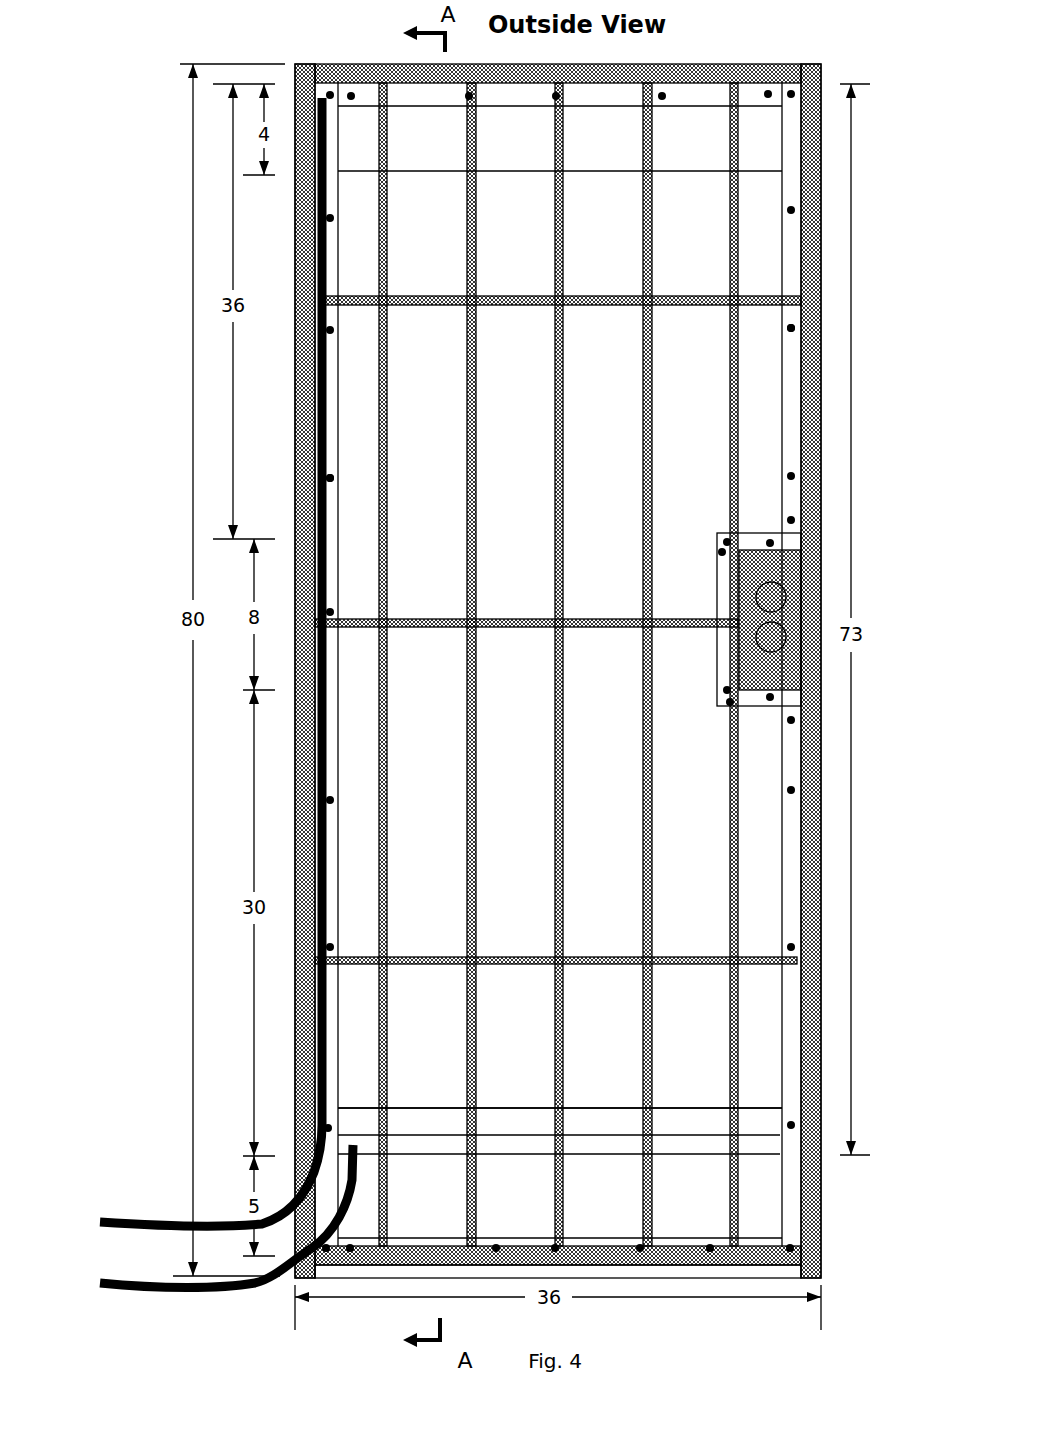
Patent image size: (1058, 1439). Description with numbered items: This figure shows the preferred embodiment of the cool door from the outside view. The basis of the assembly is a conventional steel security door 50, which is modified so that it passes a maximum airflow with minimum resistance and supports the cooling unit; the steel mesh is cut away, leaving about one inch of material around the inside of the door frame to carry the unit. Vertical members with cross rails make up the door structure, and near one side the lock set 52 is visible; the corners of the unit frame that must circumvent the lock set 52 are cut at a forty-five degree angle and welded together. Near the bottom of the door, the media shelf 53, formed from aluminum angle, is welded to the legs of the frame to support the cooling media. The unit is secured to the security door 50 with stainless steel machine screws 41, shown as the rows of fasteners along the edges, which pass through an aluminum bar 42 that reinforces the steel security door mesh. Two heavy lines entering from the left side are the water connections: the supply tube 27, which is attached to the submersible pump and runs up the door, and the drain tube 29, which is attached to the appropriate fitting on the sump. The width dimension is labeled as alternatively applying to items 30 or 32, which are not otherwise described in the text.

The supply tube 27 is at (178, 1222).
The drain tube 29 is at (134, 1282).
The wall panel 30 is at (558, 702).
The wall panel 32 is at (558, 702).
The stainless steel machine screws 41 is at (333, 478).
The aluminum bar 42 is at (790, 868).
The steel security door 50 is at (298, 413).
The lock set 52 is at (802, 598).
The media shelf 53 is at (685, 1116).